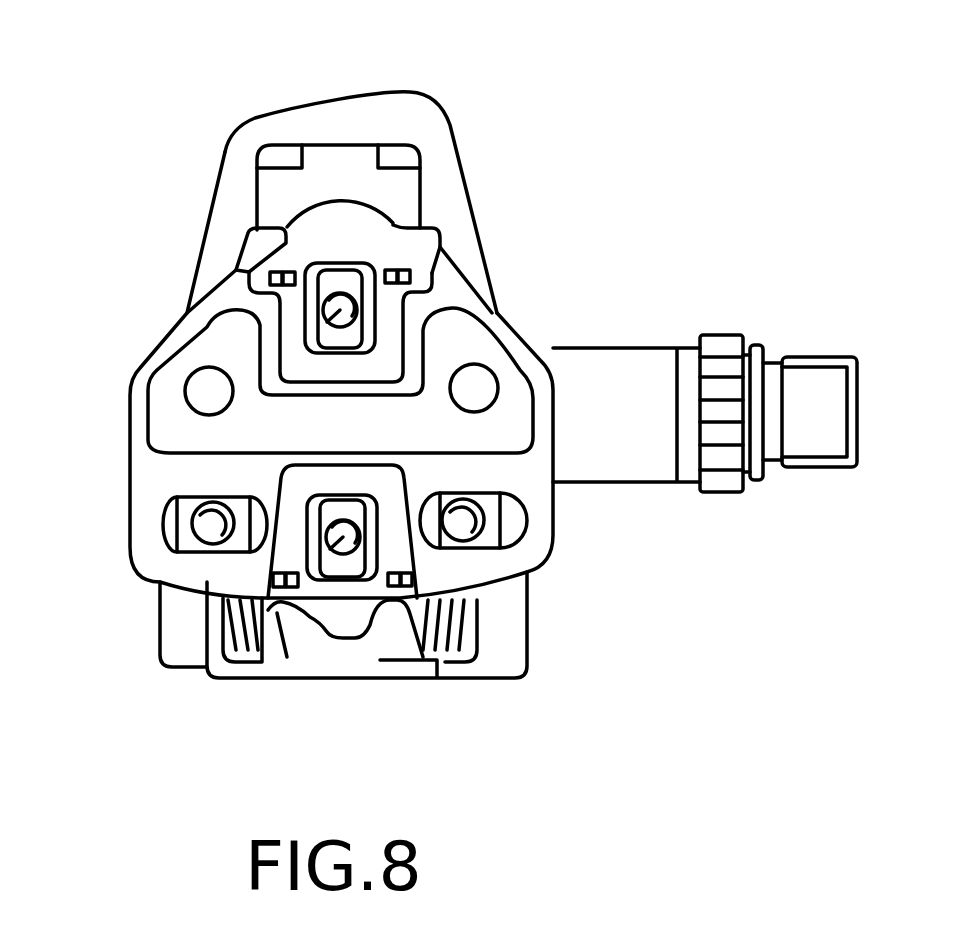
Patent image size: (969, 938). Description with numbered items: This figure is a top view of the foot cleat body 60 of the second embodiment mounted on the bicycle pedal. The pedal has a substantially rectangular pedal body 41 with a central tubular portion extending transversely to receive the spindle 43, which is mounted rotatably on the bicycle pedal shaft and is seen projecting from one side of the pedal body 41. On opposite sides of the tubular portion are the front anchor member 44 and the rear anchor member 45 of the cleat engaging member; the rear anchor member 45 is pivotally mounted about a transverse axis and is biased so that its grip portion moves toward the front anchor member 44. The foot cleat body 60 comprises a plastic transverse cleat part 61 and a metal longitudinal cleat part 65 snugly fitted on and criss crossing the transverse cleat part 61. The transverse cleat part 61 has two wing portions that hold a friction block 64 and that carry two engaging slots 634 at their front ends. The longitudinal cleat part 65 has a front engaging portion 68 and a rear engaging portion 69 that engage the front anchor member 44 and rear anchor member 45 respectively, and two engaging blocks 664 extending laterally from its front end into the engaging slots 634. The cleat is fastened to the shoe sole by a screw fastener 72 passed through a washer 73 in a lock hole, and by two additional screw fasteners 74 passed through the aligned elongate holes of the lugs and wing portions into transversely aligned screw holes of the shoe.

The pedal body 41 is at (450, 167).
The spindle 43 is at (815, 373).
The front anchor member 44 is at (327, 157).
The rear anchor member 45 is at (353, 667).
The foot cleat body 60 is at (142, 352).
The transverse cleat part 61 is at (540, 552).
The friction block 64 is at (160, 425).
The longitudinal cleat part 65 is at (248, 235).
The front engaging portion 68 is at (323, 213).
The rear engaging portion 69 is at (332, 620).
The screw fastener 72 is at (300, 340).
The washer 73 is at (243, 296).
The screw fastener 74 is at (478, 515).
The engaging slot 634 is at (450, 280).
The engaging block 664 is at (440, 232).